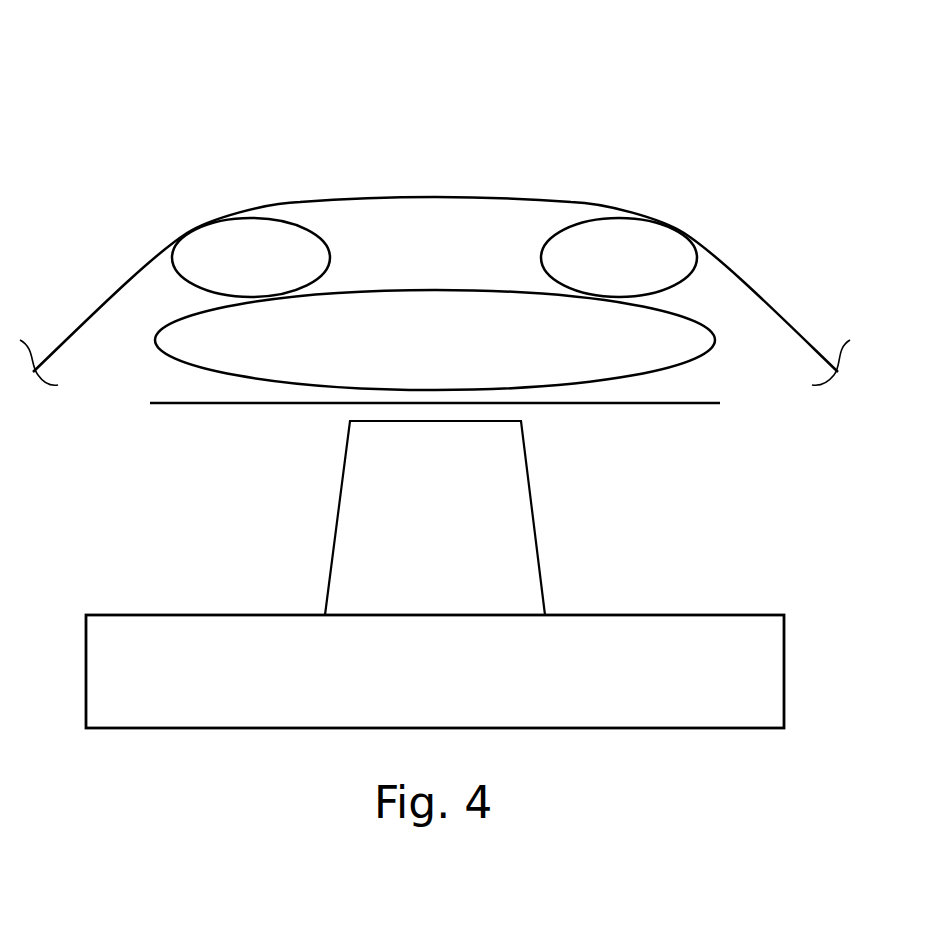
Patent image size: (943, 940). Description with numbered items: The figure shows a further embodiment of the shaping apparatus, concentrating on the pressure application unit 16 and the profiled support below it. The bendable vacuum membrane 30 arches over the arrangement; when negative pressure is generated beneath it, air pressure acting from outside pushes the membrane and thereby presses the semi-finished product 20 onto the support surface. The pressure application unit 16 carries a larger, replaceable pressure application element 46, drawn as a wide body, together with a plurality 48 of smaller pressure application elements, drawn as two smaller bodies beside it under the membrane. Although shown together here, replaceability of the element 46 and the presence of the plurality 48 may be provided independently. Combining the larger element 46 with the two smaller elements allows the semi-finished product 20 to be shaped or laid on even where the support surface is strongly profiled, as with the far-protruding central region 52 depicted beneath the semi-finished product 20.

The vacuum membrane 30 is at (508, 197).
The plurality of pressure application elements 48 is at (335, 250).
The replaceable pressure application element 46 is at (185, 345).
The pressure application unit 16 is at (720, 340).
The semi-finished product 20 is at (658, 404).
The central region 52 is at (542, 575).